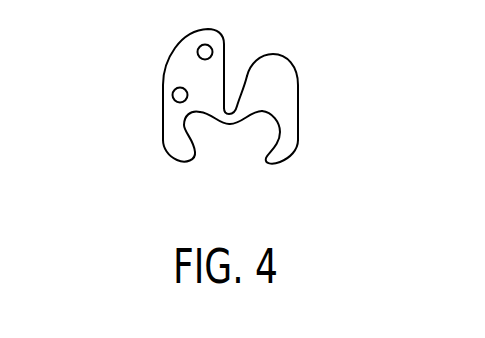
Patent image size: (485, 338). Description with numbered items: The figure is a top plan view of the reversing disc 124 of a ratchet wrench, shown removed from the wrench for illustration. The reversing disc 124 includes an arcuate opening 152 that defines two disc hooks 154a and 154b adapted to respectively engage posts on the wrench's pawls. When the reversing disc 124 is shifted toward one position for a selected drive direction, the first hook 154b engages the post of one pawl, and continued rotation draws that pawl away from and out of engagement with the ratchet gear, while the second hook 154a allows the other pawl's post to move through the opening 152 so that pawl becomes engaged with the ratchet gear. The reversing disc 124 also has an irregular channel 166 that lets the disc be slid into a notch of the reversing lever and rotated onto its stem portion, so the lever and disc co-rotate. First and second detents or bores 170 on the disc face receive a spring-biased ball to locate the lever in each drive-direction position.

The reversing disc 124 is at (294, 63).
The arcuate opening 152 is at (232, 138).
The second hook 154a is at (280, 148).
The first hook 154b is at (187, 154).
The irregular channel 166 is at (236, 96).
The detents 170 is at (199, 49).